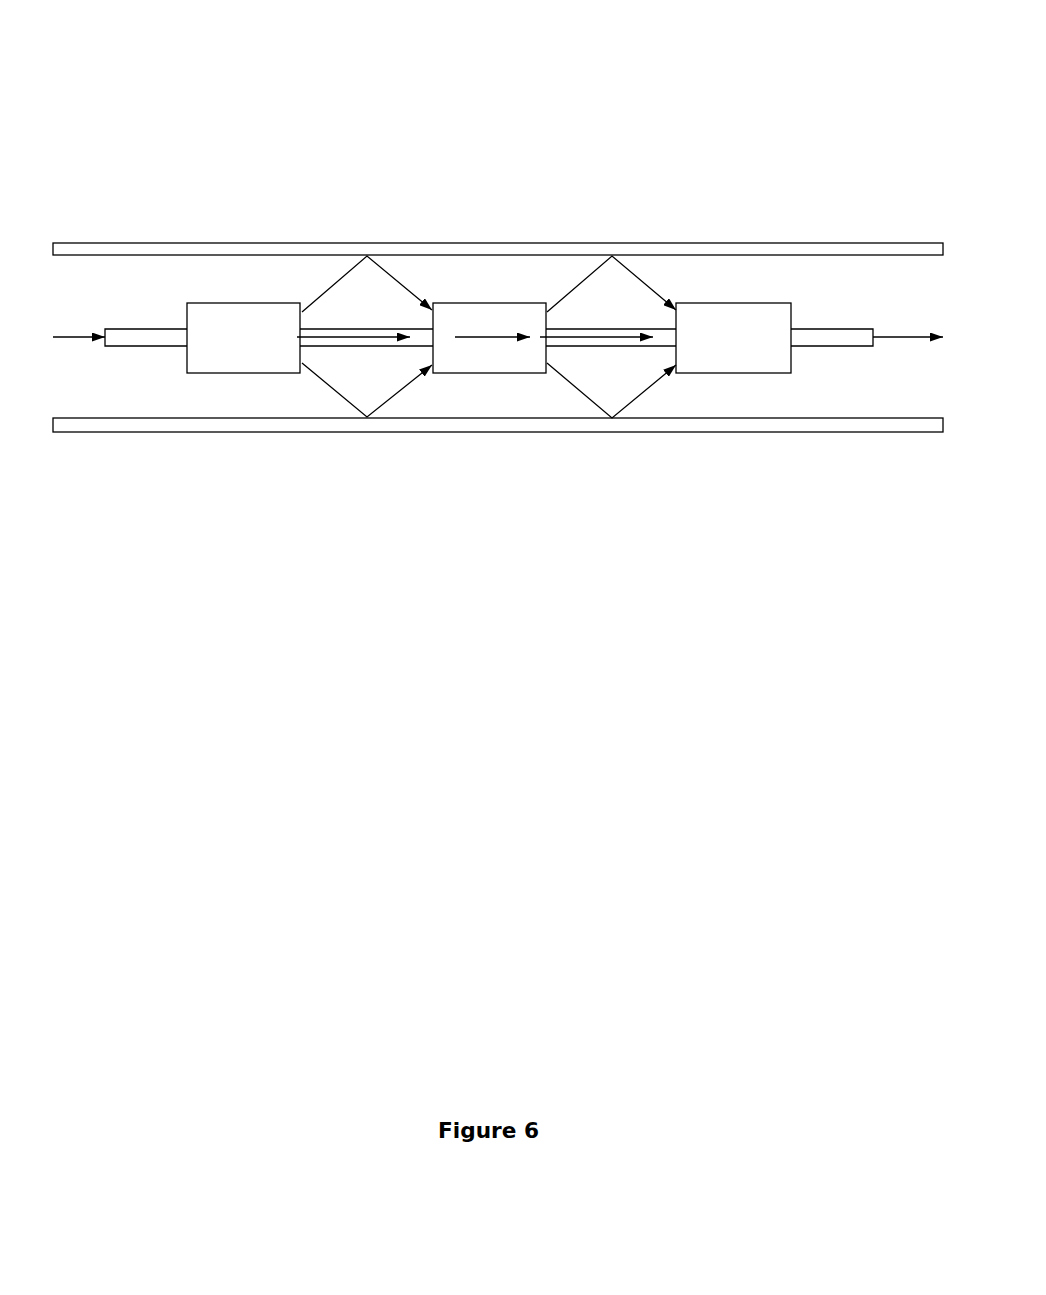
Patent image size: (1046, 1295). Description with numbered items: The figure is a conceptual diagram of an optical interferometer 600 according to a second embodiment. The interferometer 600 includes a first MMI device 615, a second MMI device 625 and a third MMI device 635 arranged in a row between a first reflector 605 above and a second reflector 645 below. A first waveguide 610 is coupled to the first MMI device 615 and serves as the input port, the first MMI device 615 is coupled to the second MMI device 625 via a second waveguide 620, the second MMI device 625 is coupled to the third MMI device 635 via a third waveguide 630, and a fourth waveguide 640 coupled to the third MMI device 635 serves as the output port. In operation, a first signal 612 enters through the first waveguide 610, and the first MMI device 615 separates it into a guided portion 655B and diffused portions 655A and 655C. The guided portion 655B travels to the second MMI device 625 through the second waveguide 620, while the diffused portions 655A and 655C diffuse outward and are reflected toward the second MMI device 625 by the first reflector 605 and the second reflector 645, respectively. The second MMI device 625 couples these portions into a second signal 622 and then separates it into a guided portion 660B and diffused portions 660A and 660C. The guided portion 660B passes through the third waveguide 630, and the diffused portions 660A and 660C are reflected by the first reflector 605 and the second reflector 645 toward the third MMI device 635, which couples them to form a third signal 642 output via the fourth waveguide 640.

The optical interferometer 600 is at (472, 192).
The first reflector 605 is at (173, 243).
The first waveguide 610 is at (128, 327).
The first signal 612 is at (63, 340).
The first MMI device 615 is at (187, 367).
The second waveguide 620 is at (318, 325).
The second signal 622 is at (490, 337).
The second MMI device 625 is at (517, 373).
The third waveguide 630 is at (565, 327).
The third MMI device 635 is at (763, 373).
The fourth waveguide 640 is at (852, 328).
The third signal 642 is at (893, 343).
The second reflector 645 is at (165, 432).
The diffused portion 655A is at (392, 275).
The guided portion 655B is at (340, 337).
The diffused portion 655C is at (382, 405).
The diffused portion 660A is at (640, 283).
The guided portion 660B is at (593, 337).
The diffused portion 660C is at (637, 397).